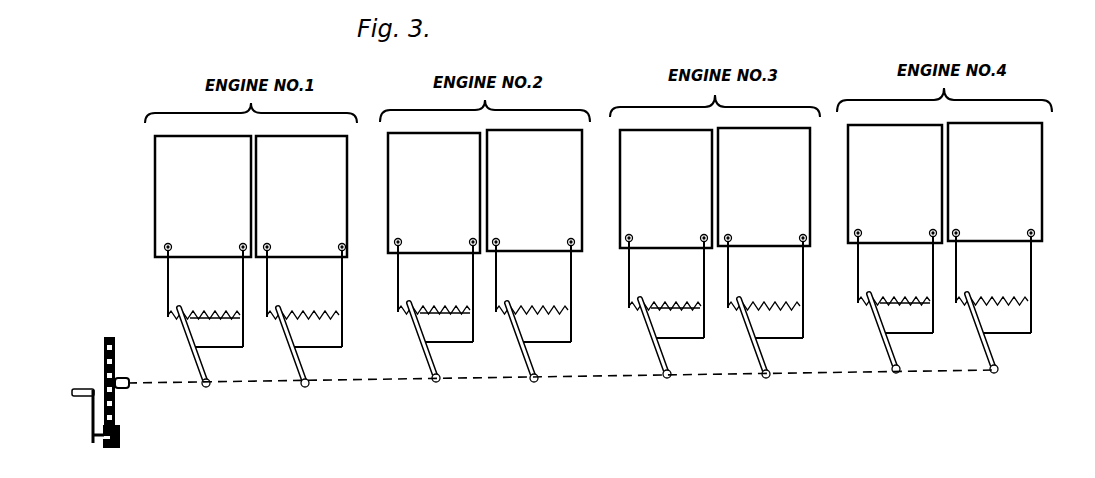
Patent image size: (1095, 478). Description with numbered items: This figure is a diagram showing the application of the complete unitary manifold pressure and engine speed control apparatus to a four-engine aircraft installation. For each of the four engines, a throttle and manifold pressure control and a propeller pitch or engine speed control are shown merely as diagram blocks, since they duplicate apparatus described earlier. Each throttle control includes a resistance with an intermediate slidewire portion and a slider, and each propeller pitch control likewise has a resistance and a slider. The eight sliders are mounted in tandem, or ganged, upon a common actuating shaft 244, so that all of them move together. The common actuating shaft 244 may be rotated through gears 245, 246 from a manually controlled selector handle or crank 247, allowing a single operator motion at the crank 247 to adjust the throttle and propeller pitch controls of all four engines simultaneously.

The common actuating shaft 244 is at (120, 389).
The gear 245 is at (105, 354).
The gear 246 is at (120, 432).
The selector handle or crank 247 is at (93, 416).